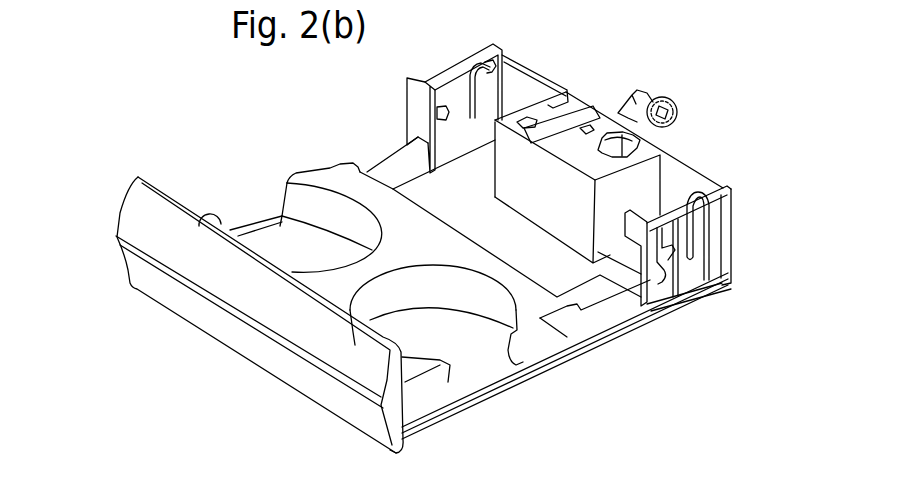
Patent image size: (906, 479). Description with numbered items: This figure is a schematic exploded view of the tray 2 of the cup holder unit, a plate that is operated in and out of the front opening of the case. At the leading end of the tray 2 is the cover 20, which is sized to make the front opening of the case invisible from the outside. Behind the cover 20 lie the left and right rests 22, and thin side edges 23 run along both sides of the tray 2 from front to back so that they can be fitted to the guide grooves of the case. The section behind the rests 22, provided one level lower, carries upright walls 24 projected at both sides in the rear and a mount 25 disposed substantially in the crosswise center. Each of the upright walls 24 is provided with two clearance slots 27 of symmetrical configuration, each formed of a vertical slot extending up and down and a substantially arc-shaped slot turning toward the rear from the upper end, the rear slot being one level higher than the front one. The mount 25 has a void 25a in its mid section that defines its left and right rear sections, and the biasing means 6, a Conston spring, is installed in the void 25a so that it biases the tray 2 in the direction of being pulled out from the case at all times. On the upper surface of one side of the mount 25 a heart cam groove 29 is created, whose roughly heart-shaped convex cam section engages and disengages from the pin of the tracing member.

The tray 2 is at (297, 150).
The cover 20 is at (130, 216).
The rests 22 is at (280, 233).
The side edges 23 is at (580, 345).
The upright walls 24 is at (456, 62).
The mount 25 is at (648, 178).
The void 25a is at (600, 123).
The clearance slots 27 is at (702, 238).
The heart cam groove 29 is at (541, 123).
The biasing means 6 is at (677, 90).